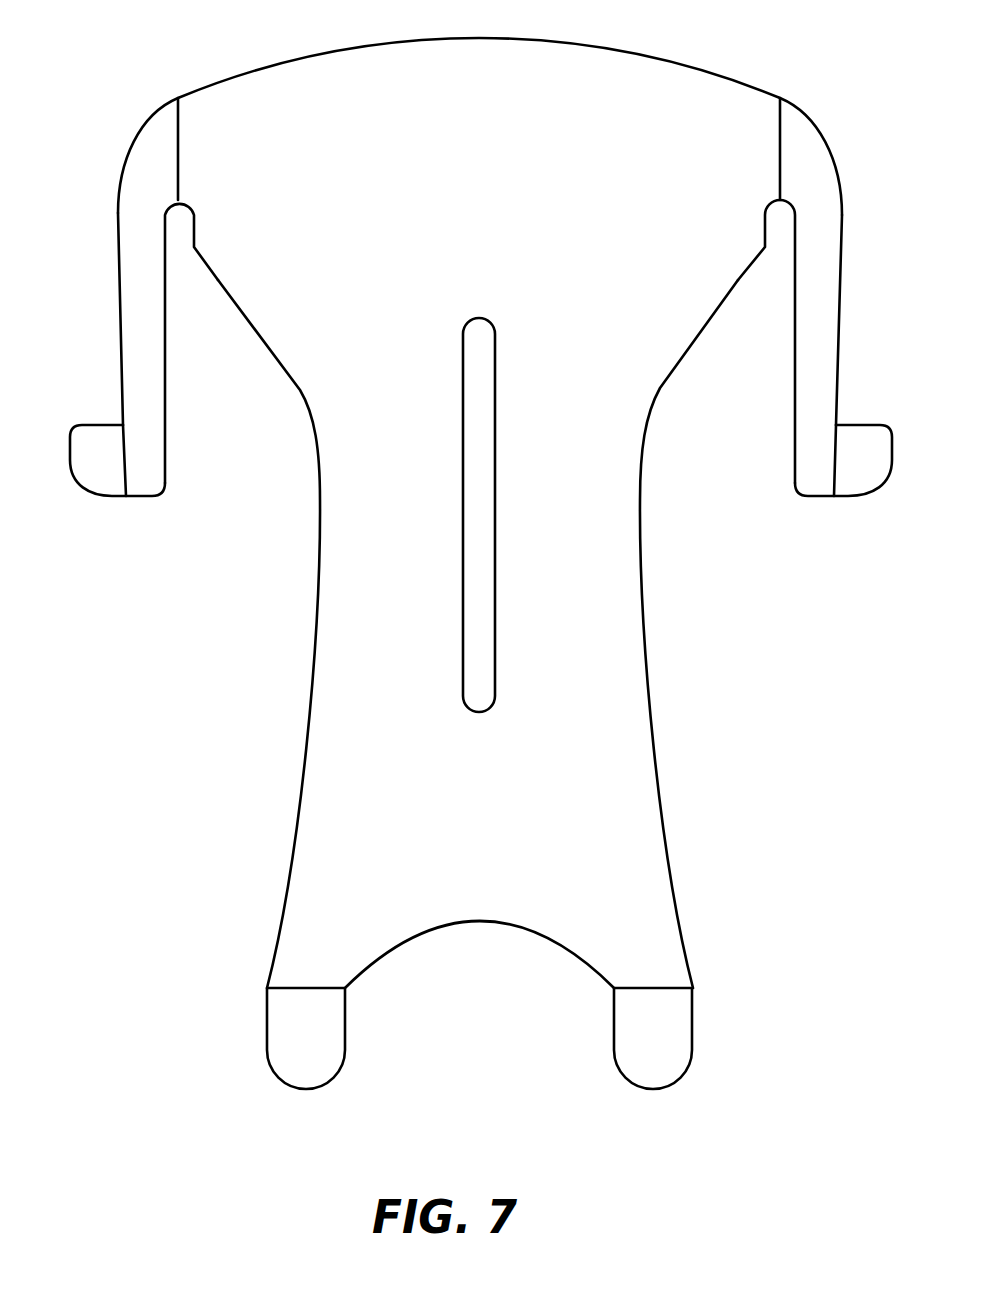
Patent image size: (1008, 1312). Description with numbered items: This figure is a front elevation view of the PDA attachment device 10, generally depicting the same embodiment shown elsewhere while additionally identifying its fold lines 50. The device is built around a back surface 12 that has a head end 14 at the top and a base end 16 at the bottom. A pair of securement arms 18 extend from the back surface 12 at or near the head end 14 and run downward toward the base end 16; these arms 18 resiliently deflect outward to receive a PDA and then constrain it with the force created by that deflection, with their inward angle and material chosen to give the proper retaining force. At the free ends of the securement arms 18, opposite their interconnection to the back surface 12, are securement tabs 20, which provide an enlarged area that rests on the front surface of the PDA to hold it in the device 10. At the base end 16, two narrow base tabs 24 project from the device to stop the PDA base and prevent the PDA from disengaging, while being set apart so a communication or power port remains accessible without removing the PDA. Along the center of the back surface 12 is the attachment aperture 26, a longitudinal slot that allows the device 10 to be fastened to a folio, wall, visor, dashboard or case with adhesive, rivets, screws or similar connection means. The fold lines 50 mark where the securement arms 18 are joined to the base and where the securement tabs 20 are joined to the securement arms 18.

The PDA attachment device 10 is at (483, 562).
The back surface 12 is at (333, 523).
The head end 14 is at (725, 87).
The base end 16 is at (290, 965).
The securement arms 18 is at (140, 295).
The securement tabs 20 is at (95, 473).
The base tabs 24 is at (292, 1063).
The attachment aperture 26 is at (463, 620).
The fold lines 50 is at (175, 148).